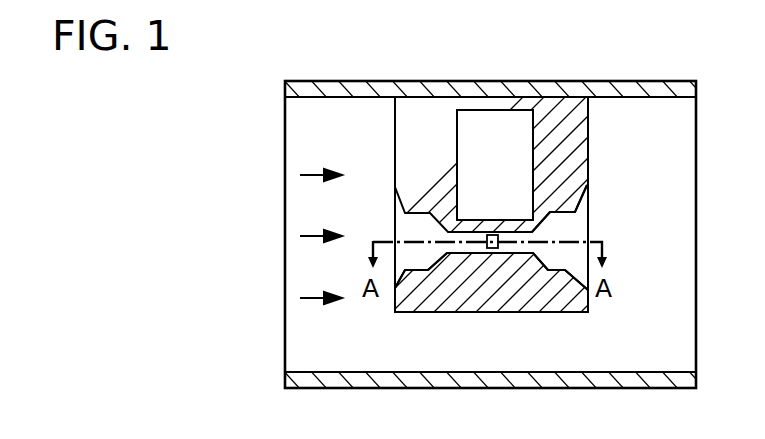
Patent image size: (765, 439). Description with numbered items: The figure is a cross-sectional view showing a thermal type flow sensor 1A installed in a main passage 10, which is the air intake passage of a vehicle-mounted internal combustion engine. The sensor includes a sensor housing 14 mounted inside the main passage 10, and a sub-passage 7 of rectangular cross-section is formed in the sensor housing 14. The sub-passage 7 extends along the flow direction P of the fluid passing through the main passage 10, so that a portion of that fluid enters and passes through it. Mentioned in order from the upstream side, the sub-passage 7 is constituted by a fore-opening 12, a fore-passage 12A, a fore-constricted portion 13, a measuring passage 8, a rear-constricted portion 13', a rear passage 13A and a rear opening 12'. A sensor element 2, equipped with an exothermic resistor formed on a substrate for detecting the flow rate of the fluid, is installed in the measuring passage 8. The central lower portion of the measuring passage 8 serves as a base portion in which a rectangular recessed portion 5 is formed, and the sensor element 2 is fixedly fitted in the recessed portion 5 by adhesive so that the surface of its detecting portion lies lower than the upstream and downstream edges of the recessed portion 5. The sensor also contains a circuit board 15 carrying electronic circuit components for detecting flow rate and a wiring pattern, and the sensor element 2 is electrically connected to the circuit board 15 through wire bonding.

The main passage 10 is at (300, 121).
The thermal type flow sensor 1A is at (370, 193).
The flow direction P is at (298, 218).
The sensor housing 14 is at (560, 109).
The circuit board 15 is at (495, 125).
The measuring passage 8 is at (465, 224).
The sub-passage 7 is at (563, 218).
The rear passage 13A is at (584, 241).
The fore-opening 12 is at (532, 216).
The fore-passage 12A is at (413, 266).
The rear opening 12' is at (621, 275).
The fore-constricted portion 13 is at (426, 303).
The rear-constricted portion 13' is at (560, 306).
The sensor element 2 is at (493, 250).
The recessed portion 5 is at (512, 251).